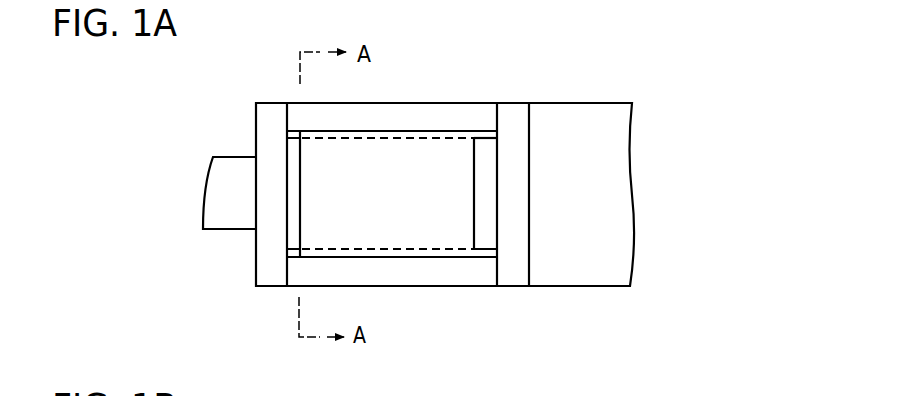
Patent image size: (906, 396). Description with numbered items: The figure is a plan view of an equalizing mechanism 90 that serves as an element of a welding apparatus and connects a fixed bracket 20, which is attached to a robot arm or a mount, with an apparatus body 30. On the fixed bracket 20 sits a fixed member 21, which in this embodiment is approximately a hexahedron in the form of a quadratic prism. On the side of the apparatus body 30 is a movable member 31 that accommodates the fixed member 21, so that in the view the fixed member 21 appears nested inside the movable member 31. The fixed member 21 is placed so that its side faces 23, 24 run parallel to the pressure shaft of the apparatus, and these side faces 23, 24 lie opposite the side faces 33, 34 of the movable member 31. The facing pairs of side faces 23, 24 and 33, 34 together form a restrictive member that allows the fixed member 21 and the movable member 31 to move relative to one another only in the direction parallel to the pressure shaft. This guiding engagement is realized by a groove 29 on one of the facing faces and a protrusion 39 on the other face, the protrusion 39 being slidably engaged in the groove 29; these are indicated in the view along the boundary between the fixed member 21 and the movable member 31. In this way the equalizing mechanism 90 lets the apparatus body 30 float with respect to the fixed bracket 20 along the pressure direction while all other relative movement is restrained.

In FIG. 1A, the equalizing mechanism 90 is at (684, 91).
In FIG. 1B, the equalizing mechanism 90 is at (682, 395).
In FIG. 1A, the fixed bracket 20 is at (415, 164).
In FIG. 1A, the fixed member 21 is at (380, 158).
In FIG. 1A, the side face 23 is at (427, 131).
In FIG. 1A, the side face 24 is at (433, 258).
In FIG. 1A, the groove 29 is at (467, 137).
In FIG. 1A, the protrusion 39 is at (482, 141).
In FIG. 1A, the side face 33 is at (367, 132).
In FIG. 1A, the side face 34 is at (373, 250).
In FIG. 1A, the apparatus body 30 is at (484, 232).
In FIG. 1A, the movable member 31 is at (408, 278).